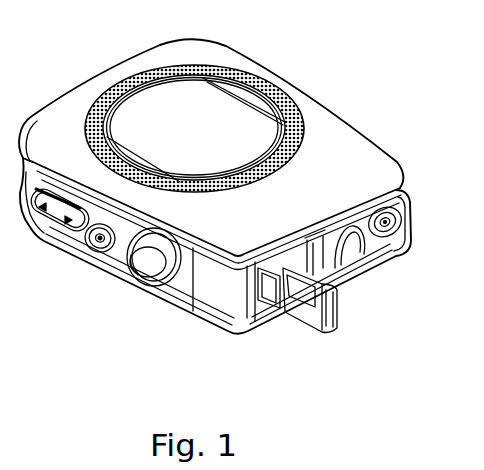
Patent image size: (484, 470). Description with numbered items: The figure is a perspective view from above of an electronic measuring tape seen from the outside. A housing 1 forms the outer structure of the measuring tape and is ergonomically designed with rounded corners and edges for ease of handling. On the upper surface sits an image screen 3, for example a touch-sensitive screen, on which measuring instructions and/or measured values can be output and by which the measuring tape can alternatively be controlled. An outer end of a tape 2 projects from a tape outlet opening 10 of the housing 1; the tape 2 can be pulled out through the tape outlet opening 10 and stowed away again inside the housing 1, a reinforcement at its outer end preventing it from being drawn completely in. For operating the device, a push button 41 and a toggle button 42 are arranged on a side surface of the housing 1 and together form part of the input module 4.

The housing 1 is at (345, 147).
The tape 2 is at (315, 305).
The image screen 3 is at (207, 120).
The input module 4 is at (88, 333).
The tape outlet opening 10 is at (273, 290).
The push button 41 is at (100, 253).
The toggle button 42 is at (50, 220).